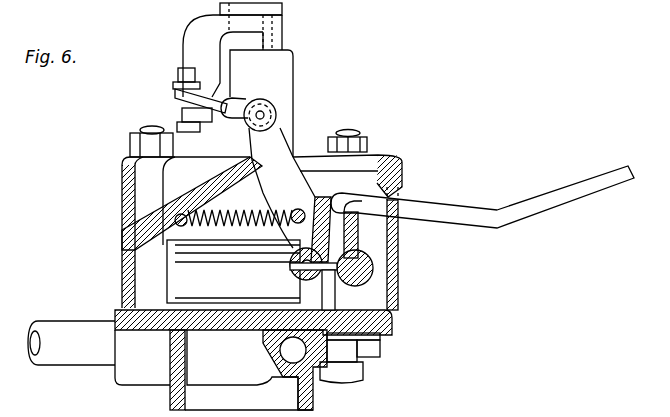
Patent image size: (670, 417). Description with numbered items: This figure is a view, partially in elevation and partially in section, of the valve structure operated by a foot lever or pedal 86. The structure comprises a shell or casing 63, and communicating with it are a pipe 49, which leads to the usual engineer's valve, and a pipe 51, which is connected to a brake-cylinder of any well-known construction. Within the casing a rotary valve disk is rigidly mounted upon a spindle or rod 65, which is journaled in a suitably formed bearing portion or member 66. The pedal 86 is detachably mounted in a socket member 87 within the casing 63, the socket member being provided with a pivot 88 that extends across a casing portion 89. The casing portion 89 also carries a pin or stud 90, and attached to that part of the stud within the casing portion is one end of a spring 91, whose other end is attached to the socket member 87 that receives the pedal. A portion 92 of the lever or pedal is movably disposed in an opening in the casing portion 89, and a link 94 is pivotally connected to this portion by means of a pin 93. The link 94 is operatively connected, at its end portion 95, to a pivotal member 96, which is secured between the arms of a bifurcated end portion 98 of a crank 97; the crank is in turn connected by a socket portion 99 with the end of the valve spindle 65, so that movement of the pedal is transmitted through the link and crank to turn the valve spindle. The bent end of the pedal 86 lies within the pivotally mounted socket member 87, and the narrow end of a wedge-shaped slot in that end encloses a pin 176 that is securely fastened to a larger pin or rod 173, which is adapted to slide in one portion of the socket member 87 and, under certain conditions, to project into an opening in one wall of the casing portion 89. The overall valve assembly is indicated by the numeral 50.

The pipe 49 is at (68, 330).
The governor assembly 50 is at (93, 150).
The pipe 51 is at (287, 350).
The shell or casing 63 is at (128, 178).
The spindle or rod 65 is at (278, 34).
The bearing portion or member 66 is at (283, 67).
The foot lever or pedal 86 is at (463, 210).
The socket member 87 is at (354, 256).
The pivot 88 is at (374, 279).
The casing portion 89 is at (400, 305).
The pin or stud 90 is at (176, 228).
The spring 91 is at (240, 216).
The portion of the lever or pedal 92 is at (277, 163).
The pin 93 is at (270, 111).
The link 94 is at (246, 104).
The end portion 95 is at (200, 92).
The pivotal member 96 is at (198, 105).
The crank 97 is at (193, 45).
The bifurcated end portion 98 is at (190, 70).
The socket portion 99 is at (283, 9).
The pin or rod 173 is at (298, 281).
The pin 176 is at (370, 256).